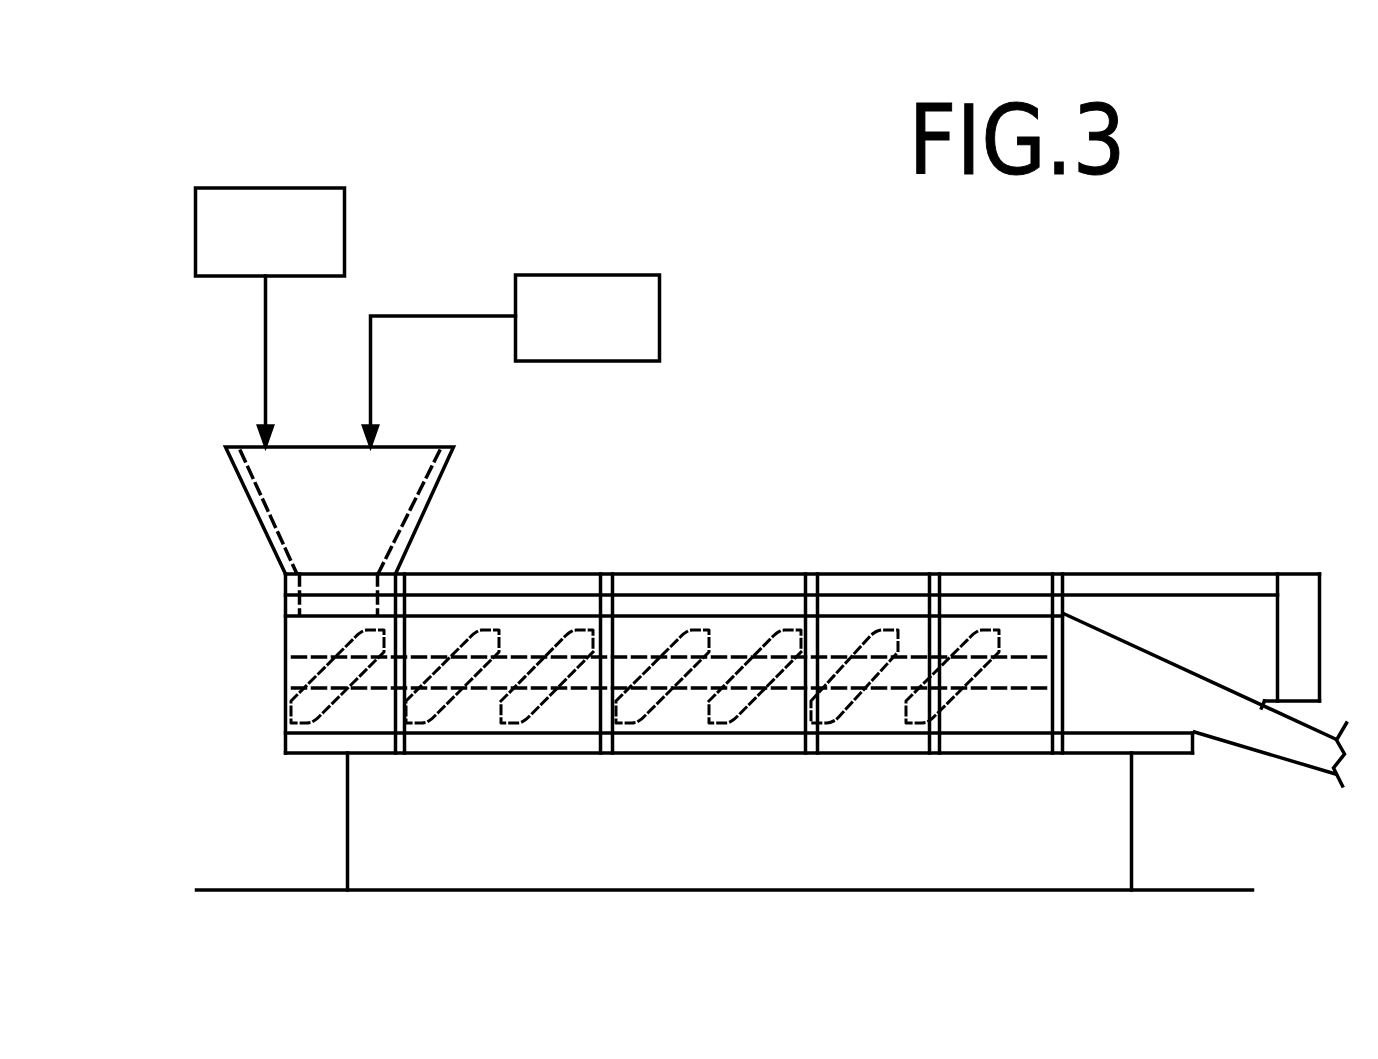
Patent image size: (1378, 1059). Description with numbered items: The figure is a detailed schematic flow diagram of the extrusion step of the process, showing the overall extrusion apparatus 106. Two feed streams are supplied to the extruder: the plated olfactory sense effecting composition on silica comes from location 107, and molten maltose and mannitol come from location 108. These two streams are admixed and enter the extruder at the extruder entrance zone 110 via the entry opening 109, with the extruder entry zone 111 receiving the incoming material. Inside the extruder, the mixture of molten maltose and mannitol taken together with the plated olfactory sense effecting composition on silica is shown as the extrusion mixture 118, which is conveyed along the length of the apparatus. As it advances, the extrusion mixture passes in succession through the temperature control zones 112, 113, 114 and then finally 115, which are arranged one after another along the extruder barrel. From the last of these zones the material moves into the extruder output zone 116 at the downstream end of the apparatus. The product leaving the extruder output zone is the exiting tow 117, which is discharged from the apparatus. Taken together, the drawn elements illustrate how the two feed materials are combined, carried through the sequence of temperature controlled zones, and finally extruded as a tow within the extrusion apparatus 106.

The extrusion apparatus 106 is at (1041, 469).
The location of plated olfactory sense effecting composition on silica 107 is at (217, 228).
The location of molten maltose and mannitol 108 is at (553, 310).
The entry opening 109 is at (235, 429).
The extruder entrance zone 110 is at (441, 504).
The extruder entry zone 111 is at (320, 588).
The temperature control zone 112 is at (485, 583).
The temperature control zone 113 is at (712, 582).
The temperature control zone 114 is at (860, 585).
The temperature control zone 115 is at (978, 587).
The extruder output zone 116 is at (1237, 668).
The exiting tow 117 is at (1233, 717).
The extrusion mixture 118 is at (502, 668).